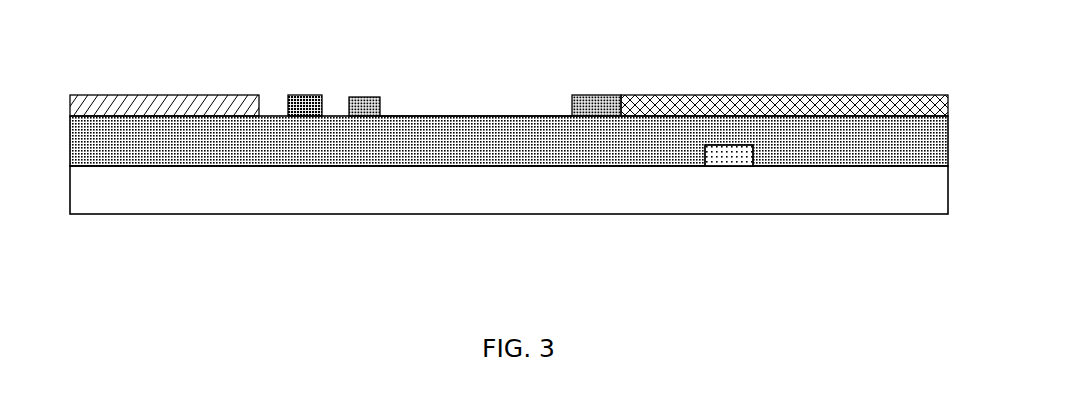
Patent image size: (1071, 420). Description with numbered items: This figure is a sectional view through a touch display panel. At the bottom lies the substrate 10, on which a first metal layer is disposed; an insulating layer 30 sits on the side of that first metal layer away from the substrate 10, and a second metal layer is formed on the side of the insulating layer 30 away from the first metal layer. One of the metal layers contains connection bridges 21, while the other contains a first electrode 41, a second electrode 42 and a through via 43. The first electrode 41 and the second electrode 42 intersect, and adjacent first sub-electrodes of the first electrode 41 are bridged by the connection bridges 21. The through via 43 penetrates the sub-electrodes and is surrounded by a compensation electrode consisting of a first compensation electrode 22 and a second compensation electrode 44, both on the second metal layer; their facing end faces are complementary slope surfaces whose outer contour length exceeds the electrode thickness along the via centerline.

The substrate 10 is at (440, 197).
The insulating layer 30 is at (523, 153).
The first electrode 41 is at (147, 95).
The first compensation electrode 22 is at (306, 95).
The second compensation electrode 44 is at (365, 105).
The through via 43 is at (485, 109).
The second electrode 42 is at (871, 104).
The connection bridge 21 is at (727, 157).